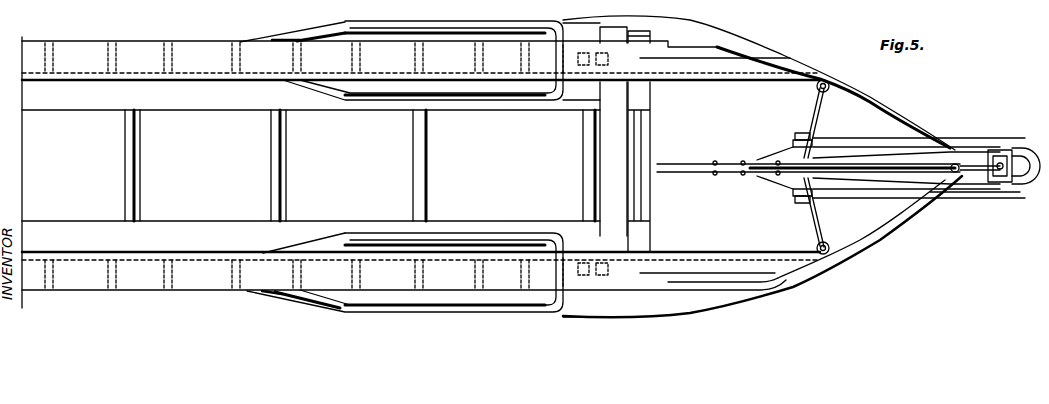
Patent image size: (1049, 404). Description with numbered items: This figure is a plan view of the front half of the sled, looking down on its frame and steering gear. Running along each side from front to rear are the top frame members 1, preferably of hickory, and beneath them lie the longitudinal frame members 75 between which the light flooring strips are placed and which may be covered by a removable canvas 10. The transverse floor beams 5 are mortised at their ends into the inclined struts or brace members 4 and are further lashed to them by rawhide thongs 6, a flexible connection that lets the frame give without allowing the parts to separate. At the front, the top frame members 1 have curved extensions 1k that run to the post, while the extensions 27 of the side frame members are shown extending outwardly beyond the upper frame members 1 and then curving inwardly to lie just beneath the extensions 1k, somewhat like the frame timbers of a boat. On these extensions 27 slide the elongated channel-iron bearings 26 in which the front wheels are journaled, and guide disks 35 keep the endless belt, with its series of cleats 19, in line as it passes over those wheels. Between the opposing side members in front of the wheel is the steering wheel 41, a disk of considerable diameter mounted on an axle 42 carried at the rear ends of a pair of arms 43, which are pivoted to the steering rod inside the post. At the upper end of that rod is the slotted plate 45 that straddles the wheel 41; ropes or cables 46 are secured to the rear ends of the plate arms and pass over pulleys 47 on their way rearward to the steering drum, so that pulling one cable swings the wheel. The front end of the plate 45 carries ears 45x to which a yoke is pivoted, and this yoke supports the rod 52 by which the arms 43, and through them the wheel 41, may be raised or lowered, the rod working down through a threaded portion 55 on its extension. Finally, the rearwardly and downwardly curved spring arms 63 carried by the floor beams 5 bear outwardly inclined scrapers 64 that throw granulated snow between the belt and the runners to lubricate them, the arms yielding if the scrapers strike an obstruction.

The top frame member 1 is at (133, 50).
The curved extension of top frame member 1k is at (783, 55).
The strut or brace member 4 is at (609, 272).
The floor beam 5 is at (134, 167).
The rawhide thong 6 is at (793, 280).
The canvas 10 is at (970, 162).
The cleat 19 is at (50, 53).
The elongated bearing 26 is at (393, 22).
The extension of side frame member 27 is at (252, 38).
The guide disk 35 is at (280, 40).
The steering wheel 41 is at (698, 163).
The axle 42 is at (795, 136).
The arm 43 is at (884, 143).
The plate 45 is at (832, 156).
The ears 45x is at (1003, 193).
The flexible member 46 is at (90, 84).
The pulley 47 is at (816, 88).
The rod 52 is at (1001, 162).
The threaded portion 55 is at (1033, 156).
The curved spring arm 63 is at (437, 32).
The scraper 64 is at (347, 32).
The longitudinal frame member 75 is at (421, 165).